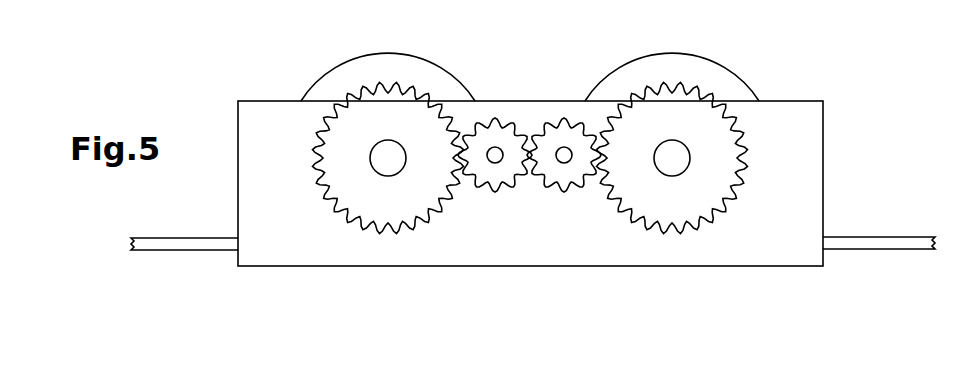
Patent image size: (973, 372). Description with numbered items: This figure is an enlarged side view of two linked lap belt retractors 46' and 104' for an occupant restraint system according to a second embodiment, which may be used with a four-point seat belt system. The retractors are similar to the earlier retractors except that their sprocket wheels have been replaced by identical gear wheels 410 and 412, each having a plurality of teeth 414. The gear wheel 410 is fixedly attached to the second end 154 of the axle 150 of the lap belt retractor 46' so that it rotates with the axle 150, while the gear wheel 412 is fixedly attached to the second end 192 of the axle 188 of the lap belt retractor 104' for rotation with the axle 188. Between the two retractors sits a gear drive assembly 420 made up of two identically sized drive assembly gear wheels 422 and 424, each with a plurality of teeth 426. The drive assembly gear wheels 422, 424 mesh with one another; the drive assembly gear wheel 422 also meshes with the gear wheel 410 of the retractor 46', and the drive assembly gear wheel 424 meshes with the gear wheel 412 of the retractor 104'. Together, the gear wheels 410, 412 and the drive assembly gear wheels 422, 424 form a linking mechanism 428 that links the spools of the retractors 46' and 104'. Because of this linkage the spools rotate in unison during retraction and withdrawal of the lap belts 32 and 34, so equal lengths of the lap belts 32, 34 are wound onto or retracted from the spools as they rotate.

The lap belt 32 is at (887, 245).
The lap belt 34 is at (165, 243).
The lap belt retractor 46' is at (696, 61).
The lap belt retractor 104' is at (344, 66).
The axle 150 is at (754, 158).
The second end 154 is at (672, 147).
The axle 188 is at (378, 150).
The second end 192 is at (314, 197).
The gear wheel 410 is at (728, 175).
The gear wheel 412 is at (355, 194).
The teeth 414 is at (410, 230).
The gear drive assembly 420 is at (529, 167).
The drive assembly gear wheel 422 is at (564, 125).
The drive assembly gear wheel 424 is at (500, 125).
The teeth 426 is at (517, 182).
The linking mechanism 428 is at (730, 289).